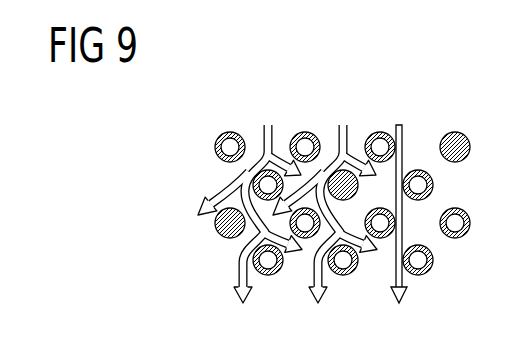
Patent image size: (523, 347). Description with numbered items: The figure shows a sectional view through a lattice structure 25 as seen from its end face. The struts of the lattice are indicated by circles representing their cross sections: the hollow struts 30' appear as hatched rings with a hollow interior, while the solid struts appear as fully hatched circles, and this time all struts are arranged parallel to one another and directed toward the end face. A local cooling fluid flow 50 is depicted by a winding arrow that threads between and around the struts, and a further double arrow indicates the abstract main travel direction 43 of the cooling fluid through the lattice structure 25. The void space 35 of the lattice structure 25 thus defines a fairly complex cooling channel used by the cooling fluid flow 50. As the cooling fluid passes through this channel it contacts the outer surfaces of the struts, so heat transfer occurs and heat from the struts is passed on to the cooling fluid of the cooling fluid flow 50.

The void space 35 is at (155, 164).
The lattice structure 25 is at (342, 203).
The hollow struts 30' is at (379, 114).
The local cooling fluid flow 50 is at (346, 126).
The main travel direction 43 is at (408, 288).